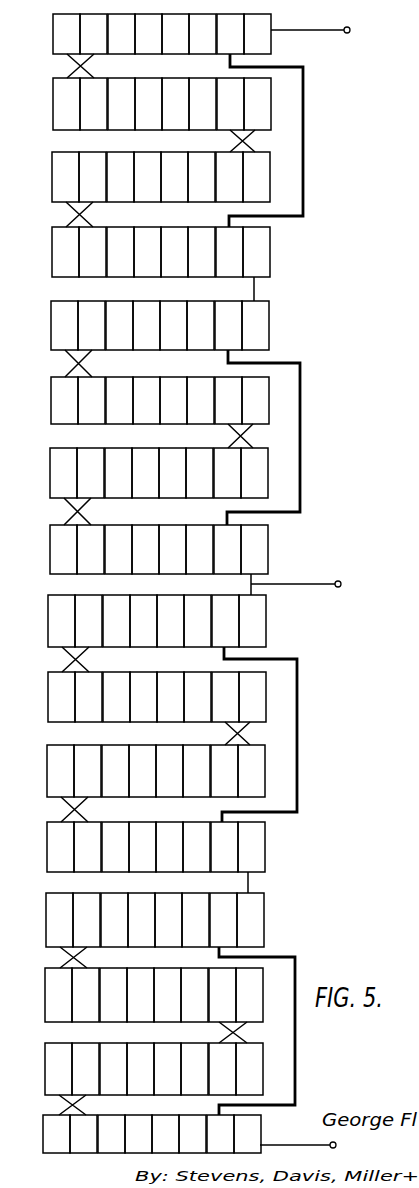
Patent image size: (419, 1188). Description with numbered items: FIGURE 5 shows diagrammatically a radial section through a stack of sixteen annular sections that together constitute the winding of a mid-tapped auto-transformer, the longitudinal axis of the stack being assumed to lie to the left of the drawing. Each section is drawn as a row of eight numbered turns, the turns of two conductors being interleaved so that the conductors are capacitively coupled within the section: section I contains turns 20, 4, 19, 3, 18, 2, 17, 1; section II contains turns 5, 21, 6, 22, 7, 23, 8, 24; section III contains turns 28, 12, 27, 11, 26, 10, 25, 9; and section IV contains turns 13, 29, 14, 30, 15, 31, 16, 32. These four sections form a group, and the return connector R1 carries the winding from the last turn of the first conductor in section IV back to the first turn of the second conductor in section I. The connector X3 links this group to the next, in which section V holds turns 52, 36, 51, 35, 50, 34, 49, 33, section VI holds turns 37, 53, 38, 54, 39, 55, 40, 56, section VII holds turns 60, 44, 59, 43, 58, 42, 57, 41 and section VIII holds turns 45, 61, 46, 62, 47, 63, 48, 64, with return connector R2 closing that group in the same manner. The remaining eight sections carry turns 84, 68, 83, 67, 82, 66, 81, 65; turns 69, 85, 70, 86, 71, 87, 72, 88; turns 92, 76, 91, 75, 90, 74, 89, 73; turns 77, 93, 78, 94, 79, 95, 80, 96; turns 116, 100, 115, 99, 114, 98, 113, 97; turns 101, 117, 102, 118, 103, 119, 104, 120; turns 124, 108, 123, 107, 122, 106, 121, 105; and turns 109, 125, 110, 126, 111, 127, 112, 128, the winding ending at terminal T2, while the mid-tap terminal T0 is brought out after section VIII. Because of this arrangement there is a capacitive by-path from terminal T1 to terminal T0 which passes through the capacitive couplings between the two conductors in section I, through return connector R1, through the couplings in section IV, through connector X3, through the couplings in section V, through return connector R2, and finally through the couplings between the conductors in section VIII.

The contact 1 is at (257, 34).
The contact 2 is at (202, 34).
The contact 3 is at (148, 34).
The contact 4 is at (93, 34).
The contact 5 is at (66, 104).
The contact 6 is at (121, 104).
The contact 7 is at (175, 104).
The contact 8 is at (230, 104).
The contact 9 is at (256, 177).
The contact 10 is at (201, 177).
The contact 11 is at (147, 177).
The contact 12 is at (92, 177).
The contact 13 is at (65, 252).
The contact 14 is at (120, 252).
The contact 15 is at (174, 252).
The contact 16 is at (229, 252).
The contact 17 is at (230, 34).
The contact 18 is at (175, 34).
The contact 19 is at (121, 34).
The contact 20 is at (66, 34).
The contact 21 is at (93, 104).
The contact 22 is at (148, 104).
The contact 23 is at (202, 104).
The contact 24 is at (257, 104).
The contact 25 is at (229, 177).
The contact 26 is at (174, 177).
The contact 27 is at (120, 177).
The contact 28 is at (65, 177).
The contact 29 is at (92, 252).
The contact 30 is at (147, 252).
The contact 31 is at (201, 252).
The contact 32 is at (256, 252).
The contact 33 is at (255, 325).
The contact 34 is at (200, 325).
The contact 35 is at (146, 325).
The contact 36 is at (91, 325).
The contact 37 is at (64, 400).
The contact 38 is at (119, 400).
The contact 39 is at (173, 400).
The contact 40 is at (228, 400).
The contact 41 is at (254, 473).
The contact 42 is at (199, 473).
The contact 43 is at (145, 473).
The contact 44 is at (90, 473).
The contact 45 is at (63, 549).
The contact 46 is at (118, 549).
The contact 47 is at (172, 549).
The contact 48 is at (227, 549).
The contact 49 is at (228, 325).
The contact 50 is at (173, 325).
The contact 51 is at (119, 325).
The contact 52 is at (64, 325).
The contact 53 is at (91, 400).
The contact 54 is at (146, 400).
The contact 55 is at (200, 400).
The contact 56 is at (255, 400).
The contact 57 is at (227, 473).
The contact 58 is at (172, 473).
The contact 59 is at (118, 473).
The contact 60 is at (63, 473).
The contact 61 is at (90, 549).
The contact 62 is at (145, 549).
The contact 63 is at (199, 549).
The contact 64 is at (254, 549).
The contact 65 is at (252, 621).
The contact 66 is at (197, 621).
The contact 67 is at (143, 621).
The contact 68 is at (88, 621).
The contact 69 is at (61, 697).
The contact 70 is at (116, 697).
The contact 71 is at (170, 697).
The contact 72 is at (225, 697).
The contact 73 is at (251, 771).
The contact 74 is at (196, 771).
The contact 75 is at (142, 771).
The contact 76 is at (87, 771).
The contact 77 is at (60, 847).
The contact 78 is at (115, 847).
The contact 79 is at (169, 847).
The contact 80 is at (224, 847).
The contact 81 is at (225, 621).
The contact 82 is at (170, 621).
The contact 83 is at (116, 621).
The contact 84 is at (61, 621).
The contact 85 is at (88, 697).
The contact 86 is at (143, 697).
The contact 87 is at (197, 697).
The contact 88 is at (252, 697).
The contact 89 is at (224, 771).
The contact 90 is at (169, 771).
The contact 91 is at (115, 771).
The contact 92 is at (60, 771).
The contact 93 is at (87, 847).
The contact 94 is at (142, 847).
The contact 95 is at (196, 847).
The contact 96 is at (251, 847).
The contact 97 is at (250, 920).
The contact 98 is at (195, 920).
The contact 99 is at (141, 920).
The contact 100 is at (86, 920).
The contact 101 is at (58, 995).
The contact 102 is at (113, 995).
The contact 103 is at (167, 995).
The contact 104 is at (222, 995).
The contact 105 is at (249, 1069).
The contact 106 is at (194, 1069).
The contact 107 is at (140, 1069).
The contact 108 is at (85, 1069).
The contact 109 is at (56, 1134).
The contact 110 is at (111, 1134).
The contact 111 is at (165, 1134).
The contact 112 is at (220, 1134).
The contact 113 is at (223, 920).
The contact 114 is at (168, 920).
The contact 115 is at (114, 920).
The contact 116 is at (59, 920).
The contact 117 is at (85, 995).
The contact 118 is at (140, 995).
The contact 119 is at (194, 995).
The contact 120 is at (249, 995).
The contact 121 is at (222, 1069).
The contact 122 is at (167, 1069).
The contact 123 is at (113, 1069).
The contact 124 is at (58, 1069).
The contact 125 is at (83, 1134).
The contact 126 is at (138, 1134).
The contact 127 is at (192, 1134).
The contact 128 is at (247, 1134).
The section I is at (152, 32).
The contact bank II is at (147, 104).
The contact bank III is at (141, 177).
The section IV is at (143, 252).
The section V is at (148, 325).
The contact bank VI is at (143, 400).
The contact bank VII is at (137, 473).
The section VIII is at (134, 549).
The terminal T1 is at (322, 30).
The terminal T0 is at (308, 586).
The terminal T2 is at (310, 1144).
The return connector R1 is at (294, 140).
The return connector R2 is at (292, 437).
The connector X3 is at (284, 293).